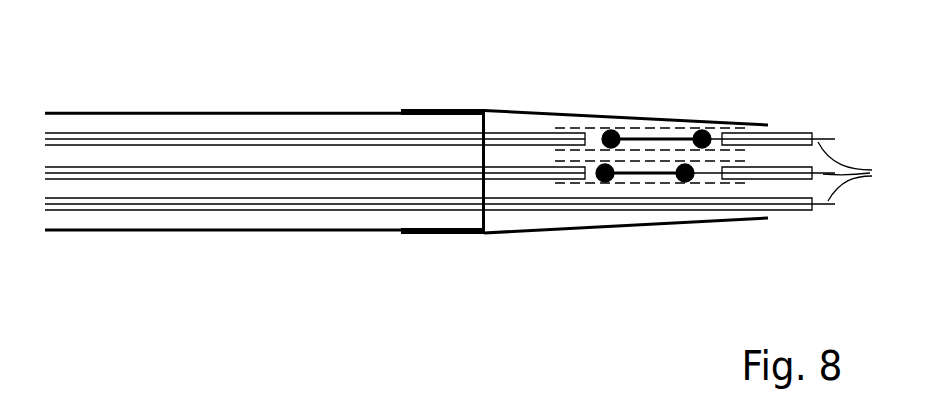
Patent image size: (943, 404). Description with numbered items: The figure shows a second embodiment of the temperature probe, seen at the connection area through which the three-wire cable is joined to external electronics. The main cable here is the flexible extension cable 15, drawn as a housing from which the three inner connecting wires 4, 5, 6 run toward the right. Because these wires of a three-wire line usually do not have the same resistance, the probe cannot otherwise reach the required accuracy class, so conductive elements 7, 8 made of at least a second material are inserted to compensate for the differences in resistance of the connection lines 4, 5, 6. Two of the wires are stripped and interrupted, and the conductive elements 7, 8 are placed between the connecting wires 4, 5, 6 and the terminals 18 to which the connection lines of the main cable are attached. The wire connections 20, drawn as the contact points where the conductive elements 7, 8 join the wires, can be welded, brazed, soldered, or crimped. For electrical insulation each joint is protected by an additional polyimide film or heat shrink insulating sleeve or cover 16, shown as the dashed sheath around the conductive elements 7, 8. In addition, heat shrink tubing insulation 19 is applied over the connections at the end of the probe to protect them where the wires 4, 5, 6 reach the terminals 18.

The connecting wire 4 is at (178, 132).
The connecting wire 5 is at (173, 167).
The connecting wire 6 is at (151, 198).
The conductive element 7 is at (660, 138).
The conductive element 8 is at (638, 162).
The flexible extension cable 15 is at (213, 220).
The insulating sleeve or cover 16 is at (288, 125).
The terminal 18 is at (530, 235).
The heat shrink tubing insulation 19 is at (860, 171).
The wire connection 20 is at (606, 166).